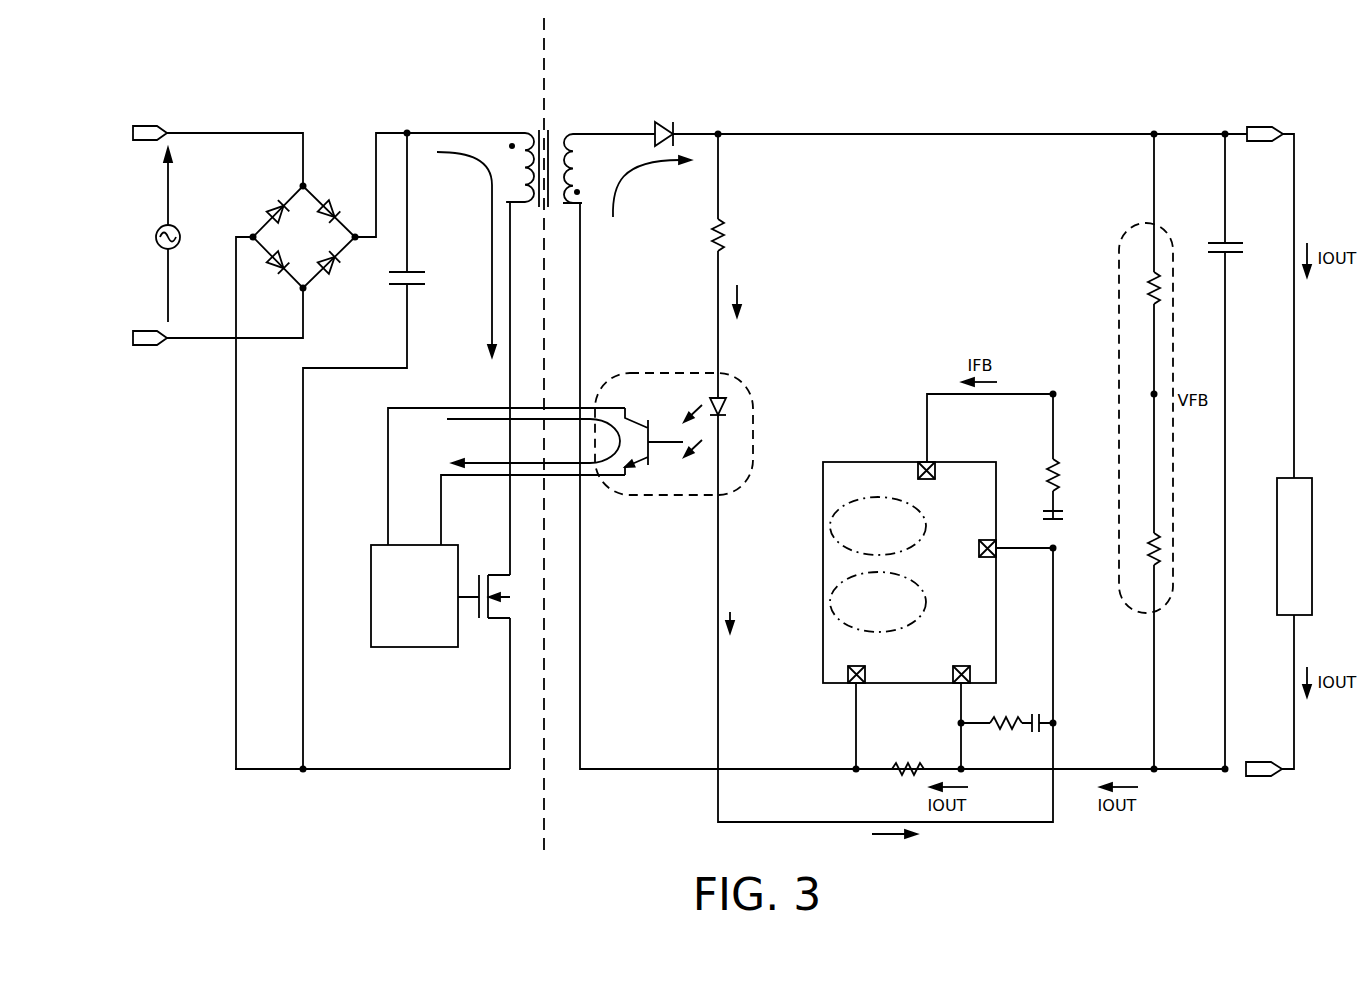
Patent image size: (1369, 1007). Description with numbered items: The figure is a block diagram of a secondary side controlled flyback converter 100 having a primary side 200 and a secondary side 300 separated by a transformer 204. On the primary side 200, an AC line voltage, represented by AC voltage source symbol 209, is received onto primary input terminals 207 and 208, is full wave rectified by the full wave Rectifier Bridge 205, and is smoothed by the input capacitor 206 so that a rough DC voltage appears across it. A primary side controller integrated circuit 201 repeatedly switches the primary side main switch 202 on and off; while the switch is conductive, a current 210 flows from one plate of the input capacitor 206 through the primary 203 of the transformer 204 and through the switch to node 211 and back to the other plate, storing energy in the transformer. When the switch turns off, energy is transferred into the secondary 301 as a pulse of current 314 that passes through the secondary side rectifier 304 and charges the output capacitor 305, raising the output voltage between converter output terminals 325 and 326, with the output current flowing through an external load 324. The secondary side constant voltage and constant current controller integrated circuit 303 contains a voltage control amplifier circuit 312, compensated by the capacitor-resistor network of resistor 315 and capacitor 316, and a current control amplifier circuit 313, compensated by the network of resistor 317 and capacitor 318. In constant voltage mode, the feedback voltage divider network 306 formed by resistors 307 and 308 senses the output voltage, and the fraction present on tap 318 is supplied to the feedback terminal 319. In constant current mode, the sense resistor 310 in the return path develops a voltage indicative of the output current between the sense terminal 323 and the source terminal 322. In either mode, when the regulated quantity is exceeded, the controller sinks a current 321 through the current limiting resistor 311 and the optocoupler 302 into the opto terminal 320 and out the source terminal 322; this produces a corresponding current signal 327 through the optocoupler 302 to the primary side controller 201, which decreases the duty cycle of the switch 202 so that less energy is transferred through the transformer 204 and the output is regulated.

The secondary side controlled flyback converter 100 is at (1030, 53).
The primary side 200 is at (309, 394).
The secondary side 300 is at (1023, 394).
The primary side controller integrated circuit 201 is at (417, 545).
The primary side main switch 202 is at (487, 575).
The primary of transformer 203 is at (525, 133).
The transformer 204 is at (546, 130).
The full wave Rectifier Bridge 205 is at (323, 195).
The input capacitor 206 is at (389, 279).
The primary input terminal 207 is at (150, 126).
The primary input terminal 208 is at (150, 331).
The AC voltage source symbol 209 is at (180, 228).
The current 210 is at (492, 324).
The node 211 is at (330, 769).
The secondary of transformer 301 is at (573, 134).
The optocoupler 302 is at (648, 373).
The secondary side constant voltage and constant current controller integrated circu 303 is at (884, 563).
The secondary side rectifier 304 is at (668, 122).
The output capacitor 305 is at (1238, 253).
The feedback voltage divider network 306 is at (1154, 392).
The resistor 307 is at (1163, 290).
The resistor 308 is at (1163, 548).
The sense resistor 310 is at (900, 775).
The resistor 311 is at (727, 235).
The voltage control amplifier circuit 312 is at (862, 536).
The current control amplifier circuit 313 is at (862, 612).
The current 314 is at (617, 205).
The resistor of capacitor-resistor network 315 is at (1047, 475).
The capacitor of capacitor-resistor network 316 is at (1063, 516).
The resistor of capacitor-resistor network 317 is at (1006, 728).
The tap of voltage divider 318 is at (1032, 718).
The feedback terminal FB 319 is at (935, 471).
The OPTO terminal 320 is at (987, 557).
The current 321 is at (821, 575).
The SOURCE terminal 322 is at (865, 669).
The SENSE terminal 323 is at (953, 672).
The external load 324 is at (1312, 478).
The converter output terminal 325 is at (1262, 141).
The converter output terminal 326 is at (1262, 762).
The current signal 327 is at (530, 443).